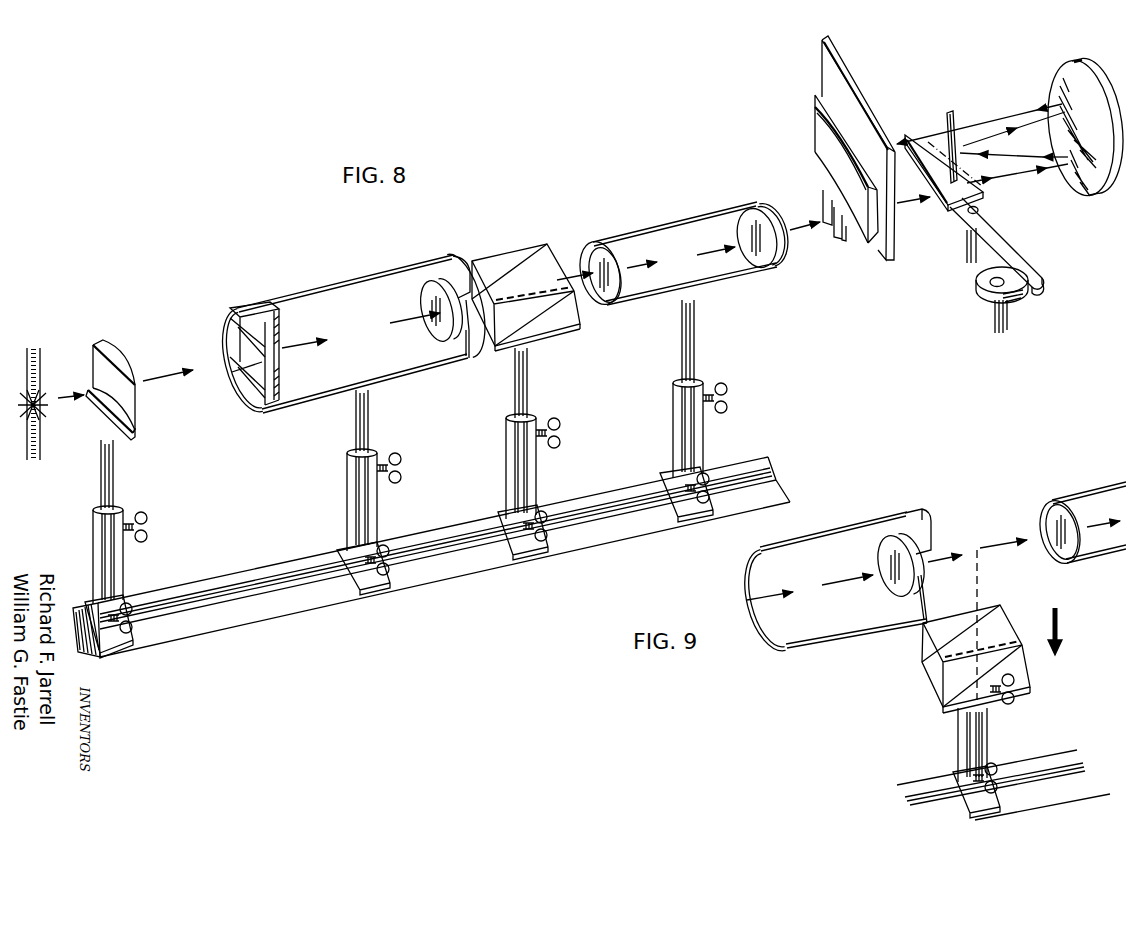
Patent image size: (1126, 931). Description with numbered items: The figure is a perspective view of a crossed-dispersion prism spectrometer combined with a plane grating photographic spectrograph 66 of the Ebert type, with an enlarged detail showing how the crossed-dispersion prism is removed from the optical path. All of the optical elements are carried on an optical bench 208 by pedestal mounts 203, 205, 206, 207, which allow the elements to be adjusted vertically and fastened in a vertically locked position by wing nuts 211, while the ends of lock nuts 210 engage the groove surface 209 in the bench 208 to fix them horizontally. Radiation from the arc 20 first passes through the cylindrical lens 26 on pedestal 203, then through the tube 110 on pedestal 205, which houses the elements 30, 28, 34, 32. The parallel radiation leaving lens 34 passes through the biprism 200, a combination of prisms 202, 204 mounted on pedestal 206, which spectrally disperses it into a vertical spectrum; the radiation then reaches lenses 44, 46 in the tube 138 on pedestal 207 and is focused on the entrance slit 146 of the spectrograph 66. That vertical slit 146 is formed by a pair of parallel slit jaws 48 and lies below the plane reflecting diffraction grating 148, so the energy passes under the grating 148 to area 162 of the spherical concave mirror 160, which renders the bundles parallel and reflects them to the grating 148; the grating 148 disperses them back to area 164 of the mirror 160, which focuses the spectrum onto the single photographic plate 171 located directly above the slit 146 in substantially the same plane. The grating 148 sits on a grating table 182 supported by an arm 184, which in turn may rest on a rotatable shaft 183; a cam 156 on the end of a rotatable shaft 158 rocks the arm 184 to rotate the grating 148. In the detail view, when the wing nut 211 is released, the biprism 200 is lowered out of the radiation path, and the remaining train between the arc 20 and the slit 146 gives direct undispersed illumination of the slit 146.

In FIG. 8, the arc 20 is at (40, 358).
In FIG. 8, the cylindrical lens 26 is at (110, 352).
In FIG. 8, the optical element 28 is at (270, 303).
In FIG. 8, the optical element 30 is at (250, 385).
In FIG. 8, the optical element 32 is at (470, 347).
In FIG. 9, the optical element 32 is at (916, 514).
In FIG. 8, the lens 34 is at (430, 277).
In FIG. 9, the lens 34 is at (884, 536).
In FIG. 8, the lens 44 is at (610, 250).
In FIG. 9, the lens 44 is at (1050, 524).
In FIG. 8, the lens 46 is at (748, 218).
In FIG. 8, the slit jaws 48 is at (840, 242).
In FIG. 8, the grating spectrograph 66 is at (978, 110).
In FIG. 8, the tube 110 is at (377, 270).
In FIG. 9, the tube 110 is at (830, 526).
In FIG. 8, the tube 138 is at (678, 217).
In FIG. 9, the tube 138 is at (1068, 494).
In FIG. 8, the entrance slit 146 is at (832, 218).
In FIG. 8, the diffraction grating 148 is at (951, 112).
In FIG. 8, the cam 156 is at (1024, 298).
In FIG. 8, the rotatable shaft 158 is at (1009, 323).
In FIG. 8, the spherical concave mirror 160 is at (1069, 133).
In FIG. 8, the mirror area 162 is at (1082, 180).
In FIG. 8, the mirror area 164 is at (1066, 103).
In FIG. 8, the photographic plate 171 is at (848, 80).
In FIG. 8, the grating table 182 is at (950, 203).
In FIG. 8, the rotatable shaft 183 is at (966, 250).
In FIG. 8, the arm 184 is at (998, 235).
In FIG. 8, the biprism 200 is at (538, 285).
In FIG. 9, the biprism 200 is at (1006, 647).
In FIG. 8, the prism 202 is at (518, 258).
In FIG. 9, the prism 202 is at (950, 625).
In FIG. 8, the prism 204 is at (558, 322).
In FIG. 9, the prism 204 is at (1012, 670).
In FIG. 8, the pedestal mount 203 is at (122, 567).
In FIG. 8, the pedestal mount 205 is at (378, 507).
In FIG. 8, the pedestal mount 206 is at (537, 469).
In FIG. 9, the pedestal mount 206 is at (988, 726).
In FIG. 8, the pedestal mount 207 is at (704, 437).
In FIG. 8, the optical bench 208 is at (292, 605).
In FIG. 9, the optical bench 208 is at (1017, 768).
In FIG. 8, the groove surface 209 is at (327, 578).
In FIG. 9, the groove surface 209 is at (1050, 782).
In FIG. 8, the lock nuts 210 is at (133, 625).
In FIG. 9, the lock nuts 210 is at (998, 790).
In FIG. 8, the wing nuts 211 is at (158, 517).
In FIG. 9, the wing nuts 211 is at (1016, 700).